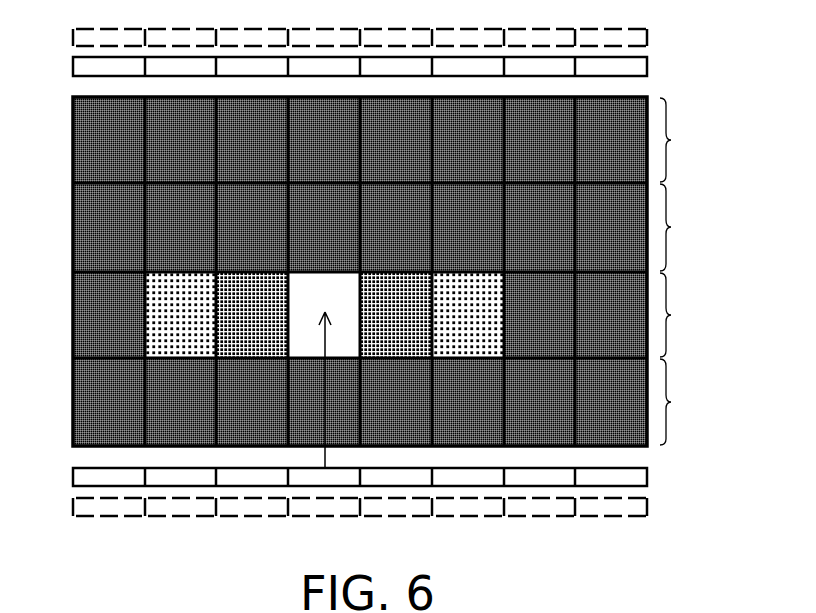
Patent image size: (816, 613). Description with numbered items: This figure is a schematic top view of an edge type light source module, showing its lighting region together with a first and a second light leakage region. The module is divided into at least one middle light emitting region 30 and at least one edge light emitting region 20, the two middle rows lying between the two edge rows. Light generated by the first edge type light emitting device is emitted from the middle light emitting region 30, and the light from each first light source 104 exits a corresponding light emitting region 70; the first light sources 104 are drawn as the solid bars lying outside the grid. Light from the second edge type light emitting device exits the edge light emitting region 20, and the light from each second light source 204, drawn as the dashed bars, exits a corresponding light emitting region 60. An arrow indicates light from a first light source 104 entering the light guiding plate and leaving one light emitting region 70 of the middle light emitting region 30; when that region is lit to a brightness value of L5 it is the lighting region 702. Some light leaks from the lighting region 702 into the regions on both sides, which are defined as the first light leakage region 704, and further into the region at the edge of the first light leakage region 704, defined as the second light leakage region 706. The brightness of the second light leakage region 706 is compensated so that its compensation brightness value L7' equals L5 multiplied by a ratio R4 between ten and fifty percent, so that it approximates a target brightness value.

The edge light emitting region 20 is at (679, 271).
The middle light emitting region 30 is at (679, 270).
The light emitting region 60 is at (78, 157).
The light emitting region 70 is at (78, 245).
The first light source 104 is at (648, 63).
The second light source 204 is at (657, 30).
The lighting region 702 is at (342, 346).
The first light leakage region 704 is at (250, 346).
The second light leakage region 706 is at (180, 346).